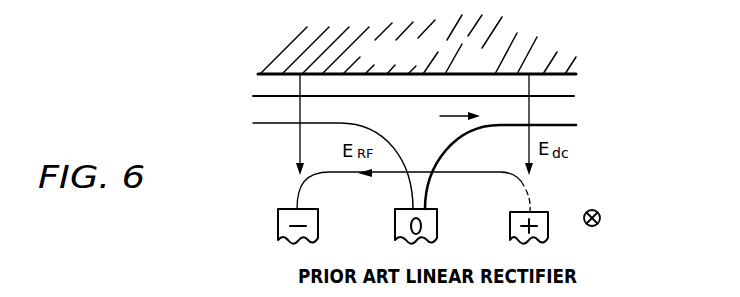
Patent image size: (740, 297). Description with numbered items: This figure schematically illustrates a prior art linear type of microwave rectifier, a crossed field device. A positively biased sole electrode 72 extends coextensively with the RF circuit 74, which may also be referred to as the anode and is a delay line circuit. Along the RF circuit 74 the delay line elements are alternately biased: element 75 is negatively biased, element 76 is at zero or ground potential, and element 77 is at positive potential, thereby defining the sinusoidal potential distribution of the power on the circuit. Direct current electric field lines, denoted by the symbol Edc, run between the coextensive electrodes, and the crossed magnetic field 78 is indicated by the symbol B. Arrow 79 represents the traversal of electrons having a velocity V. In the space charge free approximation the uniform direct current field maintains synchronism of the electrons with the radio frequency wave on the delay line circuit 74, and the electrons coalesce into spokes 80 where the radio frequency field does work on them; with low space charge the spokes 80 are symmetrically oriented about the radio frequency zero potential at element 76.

The sole electrode 72 is at (467, 73).
The RF circuit 74 is at (380, 218).
The negatively biased delay line element 75 is at (318, 222).
The zero or ground potential delay line element 76 is at (437, 222).
The positively biased delay line element 77 is at (548, 225).
The crossed magnetic field 78 is at (595, 210).
The arrow representing electron traversal 79 is at (448, 121).
The space charge spokes 80 is at (431, 190).